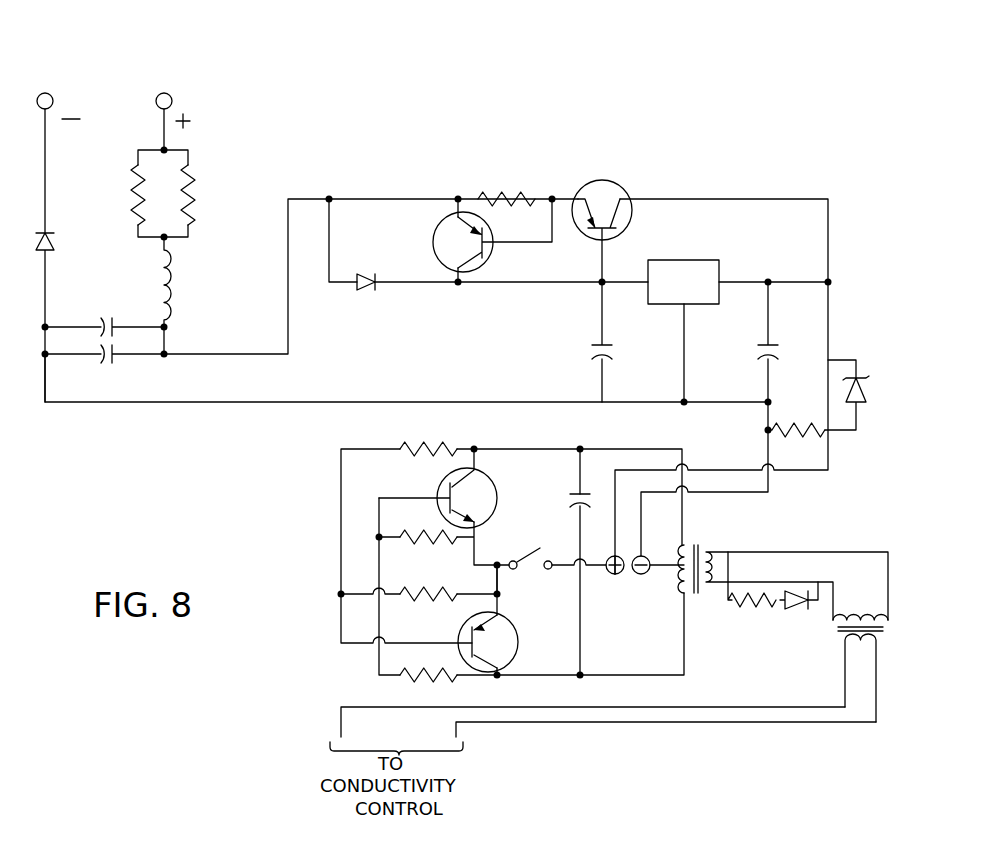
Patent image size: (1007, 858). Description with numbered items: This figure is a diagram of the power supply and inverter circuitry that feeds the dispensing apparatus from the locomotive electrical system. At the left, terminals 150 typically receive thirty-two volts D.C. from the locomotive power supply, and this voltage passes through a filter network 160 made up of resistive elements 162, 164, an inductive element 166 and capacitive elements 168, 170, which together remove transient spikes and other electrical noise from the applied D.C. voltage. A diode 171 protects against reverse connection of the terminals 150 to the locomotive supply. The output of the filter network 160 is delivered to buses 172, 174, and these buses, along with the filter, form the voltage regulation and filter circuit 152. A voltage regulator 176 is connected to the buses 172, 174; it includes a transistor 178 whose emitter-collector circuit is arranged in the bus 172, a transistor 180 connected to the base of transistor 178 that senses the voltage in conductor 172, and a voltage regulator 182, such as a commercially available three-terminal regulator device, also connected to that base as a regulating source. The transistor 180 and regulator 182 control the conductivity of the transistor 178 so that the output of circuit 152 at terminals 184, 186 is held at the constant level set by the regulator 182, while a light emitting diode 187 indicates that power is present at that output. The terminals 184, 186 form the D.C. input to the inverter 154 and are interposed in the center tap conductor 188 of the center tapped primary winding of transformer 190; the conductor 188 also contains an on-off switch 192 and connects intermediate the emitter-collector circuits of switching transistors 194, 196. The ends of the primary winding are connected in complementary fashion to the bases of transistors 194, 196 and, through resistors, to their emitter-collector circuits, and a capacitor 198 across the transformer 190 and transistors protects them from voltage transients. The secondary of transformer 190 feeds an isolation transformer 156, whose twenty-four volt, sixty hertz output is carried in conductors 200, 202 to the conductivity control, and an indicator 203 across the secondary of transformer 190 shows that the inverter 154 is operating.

The terminals 150 is at (53, 97).
The voltage regulation and filter circuit 152 is at (342, 159).
The inverter 154 is at (275, 526).
The isolation transformer 156 is at (833, 636).
The filter network 160 is at (101, 189).
The resistive element 162 is at (192, 190).
The resistive element 164 is at (136, 191).
The inductive element 166 is at (168, 278).
The capacitive element 168 is at (114, 318).
The capacitive element 170 is at (113, 361).
The diode 171 is at (53, 243).
The bus 172 is at (191, 354).
The bus 174 is at (157, 403).
The voltage regulator 176 is at (456, 334).
The transistor 178 is at (612, 181).
The transistor 180 is at (441, 229).
The voltage regulator 182 is at (692, 260).
The terminal 184 is at (616, 575).
The terminal 186 is at (641, 575).
The light emitting diode 187 is at (852, 385).
The center tap conductor 188 is at (553, 560).
The transformer 190 is at (698, 552).
The on-off switch 192 is at (522, 586).
The switching transistor 194 is at (488, 478).
The switching transistor 196 is at (518, 641).
The capacitor 198 is at (578, 493).
The conductor 200 is at (503, 722).
The conductor 202 is at (340, 722).
The indicator 203 is at (797, 606).